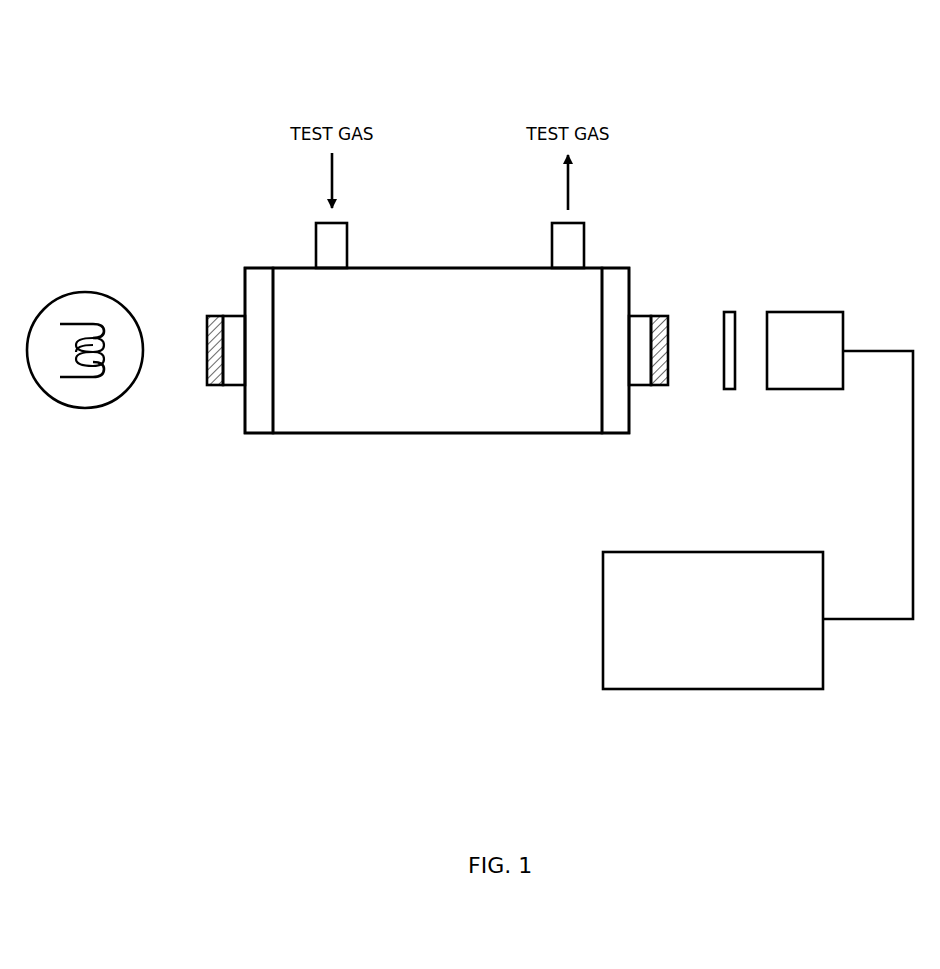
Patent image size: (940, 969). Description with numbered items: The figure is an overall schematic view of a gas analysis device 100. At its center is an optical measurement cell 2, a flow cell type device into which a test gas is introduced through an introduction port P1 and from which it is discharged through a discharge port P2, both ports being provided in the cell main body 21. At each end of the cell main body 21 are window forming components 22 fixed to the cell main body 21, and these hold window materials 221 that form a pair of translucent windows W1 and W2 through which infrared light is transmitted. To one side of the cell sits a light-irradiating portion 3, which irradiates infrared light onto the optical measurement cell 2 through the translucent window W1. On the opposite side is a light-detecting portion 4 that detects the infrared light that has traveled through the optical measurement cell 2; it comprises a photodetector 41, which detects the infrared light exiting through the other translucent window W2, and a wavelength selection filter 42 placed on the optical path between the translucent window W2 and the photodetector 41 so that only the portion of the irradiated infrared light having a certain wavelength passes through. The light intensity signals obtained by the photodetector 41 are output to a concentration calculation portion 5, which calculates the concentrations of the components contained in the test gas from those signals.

The gas analysis device 100 is at (172, 115).
The optical measurement cell 2 is at (366, 435).
The cell main body 21 is at (480, 435).
The window forming components 22 is at (255, 434).
The window materials 221 is at (213, 388).
The light-irradiating portion 3 is at (85, 292).
The light-detecting portion 4 is at (818, 240).
The photodetector 41 is at (808, 312).
The wavelength selection filter 42 is at (730, 312).
The concentration calculation portion 5 is at (713, 691).
The introduction port P1 is at (316, 245).
The discharge port P2 is at (552, 245).
The translucent window W1 is at (205, 350).
The translucent window W2 is at (668, 352).